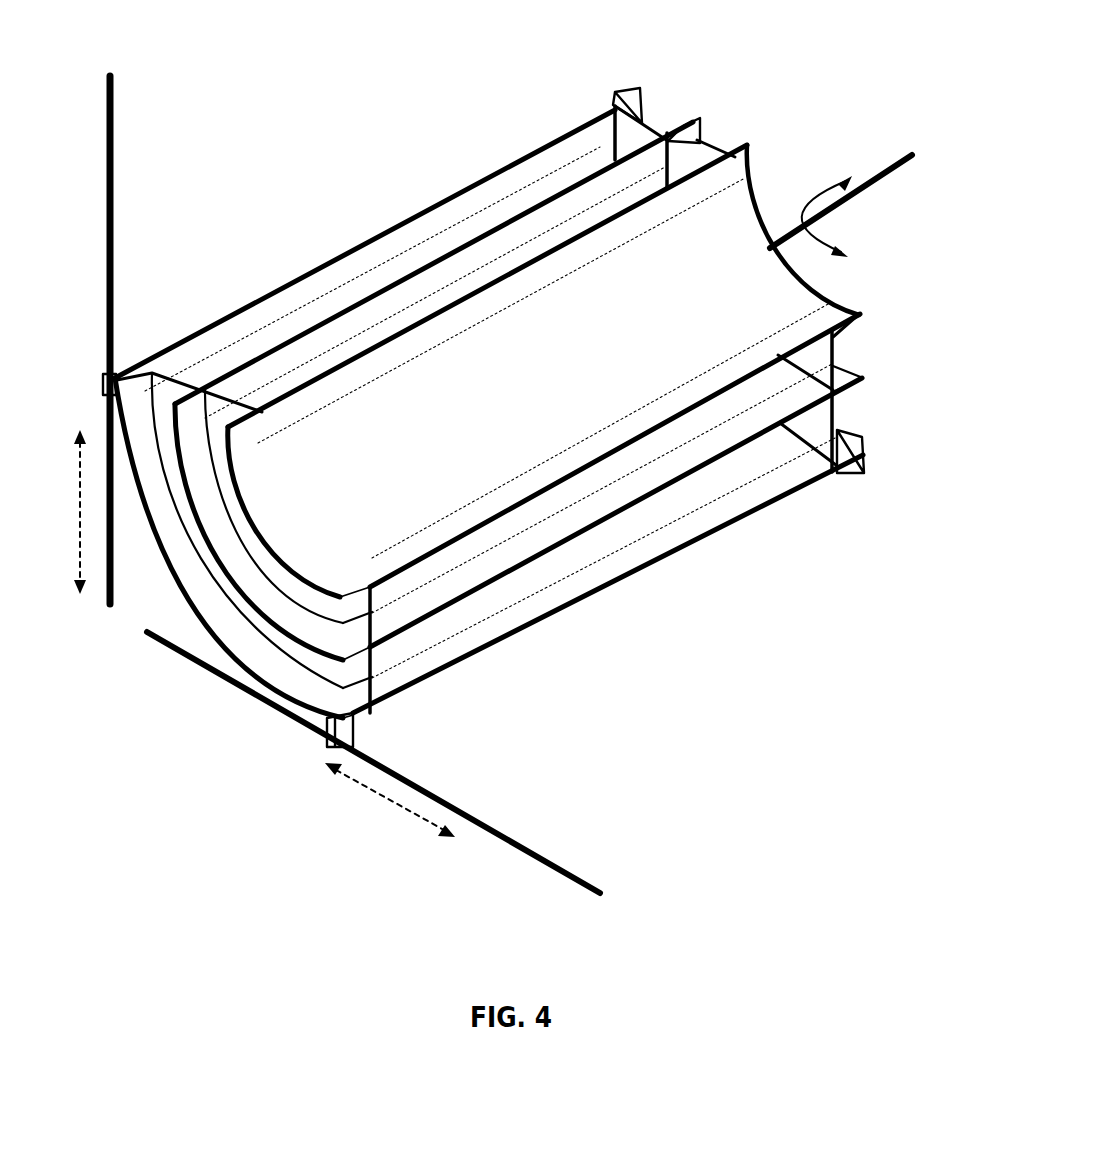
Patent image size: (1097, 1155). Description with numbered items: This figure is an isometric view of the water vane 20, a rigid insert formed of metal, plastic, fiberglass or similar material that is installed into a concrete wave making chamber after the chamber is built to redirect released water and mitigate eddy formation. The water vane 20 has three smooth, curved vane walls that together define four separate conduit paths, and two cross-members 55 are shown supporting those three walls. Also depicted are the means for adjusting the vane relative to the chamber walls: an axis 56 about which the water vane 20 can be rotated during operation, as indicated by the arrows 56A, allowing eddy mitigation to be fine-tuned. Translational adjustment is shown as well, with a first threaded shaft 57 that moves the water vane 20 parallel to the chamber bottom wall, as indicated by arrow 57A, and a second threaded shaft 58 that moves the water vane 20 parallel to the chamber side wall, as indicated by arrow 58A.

The water vane 20 is at (238, 245).
The cross-member 55 is at (173, 345).
The axis 56 is at (873, 179).
The arrows 56A is at (828, 258).
The first threaded shaft 57 is at (582, 885).
The arrow 57A is at (388, 798).
The second threaded shaft 58 is at (107, 143).
The arrow 58A is at (45, 512).